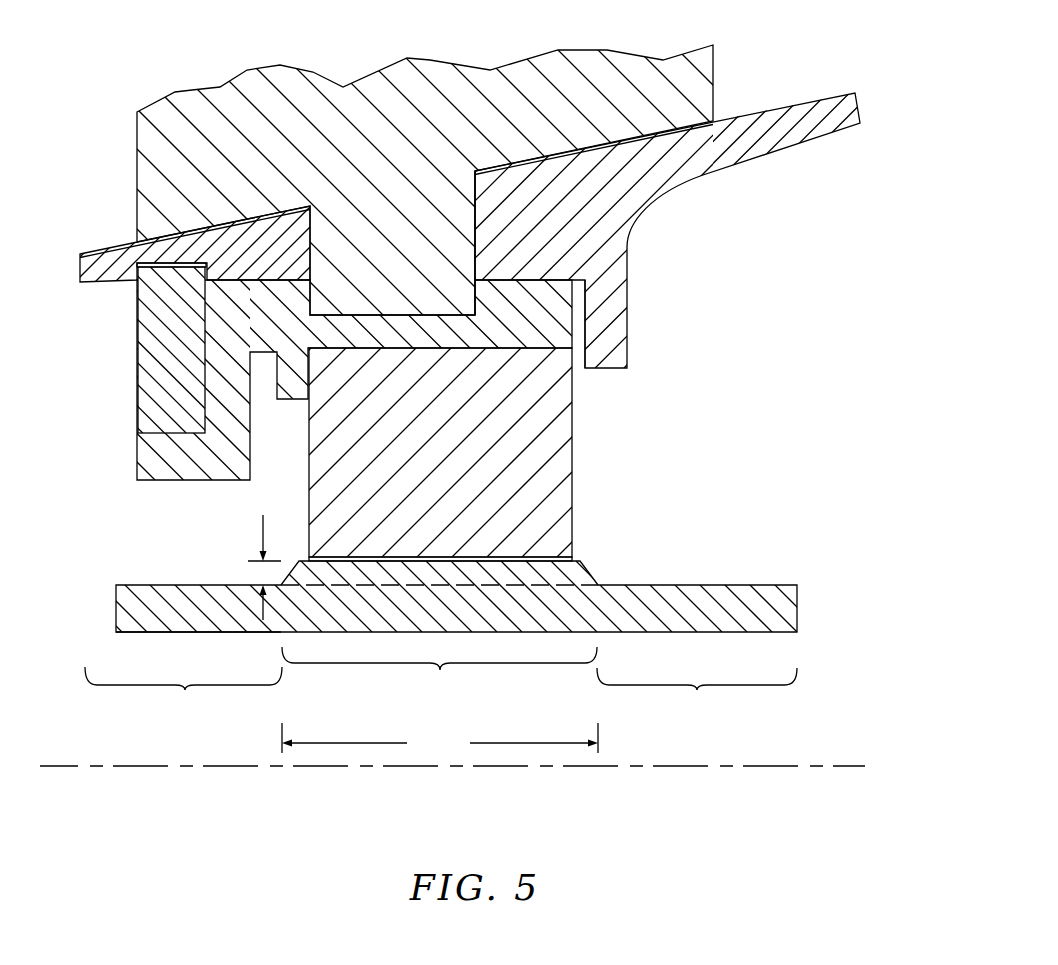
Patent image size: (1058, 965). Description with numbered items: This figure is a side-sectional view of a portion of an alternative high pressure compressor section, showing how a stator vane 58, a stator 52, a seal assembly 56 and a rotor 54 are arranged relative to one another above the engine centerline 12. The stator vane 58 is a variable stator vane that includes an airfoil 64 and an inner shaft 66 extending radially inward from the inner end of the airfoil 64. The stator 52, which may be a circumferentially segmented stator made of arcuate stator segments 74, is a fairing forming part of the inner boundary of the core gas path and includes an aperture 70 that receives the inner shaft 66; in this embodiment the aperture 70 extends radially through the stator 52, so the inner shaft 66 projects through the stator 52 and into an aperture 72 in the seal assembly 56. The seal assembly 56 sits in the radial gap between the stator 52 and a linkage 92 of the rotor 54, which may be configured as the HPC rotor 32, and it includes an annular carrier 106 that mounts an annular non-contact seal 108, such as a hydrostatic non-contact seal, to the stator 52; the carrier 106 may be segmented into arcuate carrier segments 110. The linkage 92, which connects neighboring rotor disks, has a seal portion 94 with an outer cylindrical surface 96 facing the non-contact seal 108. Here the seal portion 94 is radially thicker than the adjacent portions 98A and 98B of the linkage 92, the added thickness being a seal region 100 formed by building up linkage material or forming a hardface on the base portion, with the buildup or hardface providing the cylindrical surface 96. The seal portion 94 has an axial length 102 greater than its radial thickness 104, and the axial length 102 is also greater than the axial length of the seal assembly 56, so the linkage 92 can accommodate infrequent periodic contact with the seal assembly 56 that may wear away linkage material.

The centerline 12 is at (768, 768).
The HPC rotor 32 is at (478, 598).
The rotor 54 is at (802, 610).
The stator 52 is at (478, 200).
The seal assembly 56 is at (416, 452).
The stator vane 58 is at (491, 168).
The airfoil 64 is at (491, 180).
The inner shaft 66 is at (376, 236).
The aperture 70 is at (473, 215).
The aperture 72 is at (474, 295).
The stator segment 74 is at (762, 153).
The linkage 92 is at (128, 640).
The seal portion 94 is at (439, 675).
The outer cylindrical surface 96 is at (570, 556).
The adjacent portion 98A is at (183, 696).
The adjacent portion 98B is at (697, 696).
The seal region 100 is at (580, 575).
The axial length 102 is at (440, 739).
The radial thickness 104 is at (262, 530).
The carrier 106 is at (576, 322).
The non-contact seal 108 is at (577, 455).
The carrier segment 110 is at (155, 460).